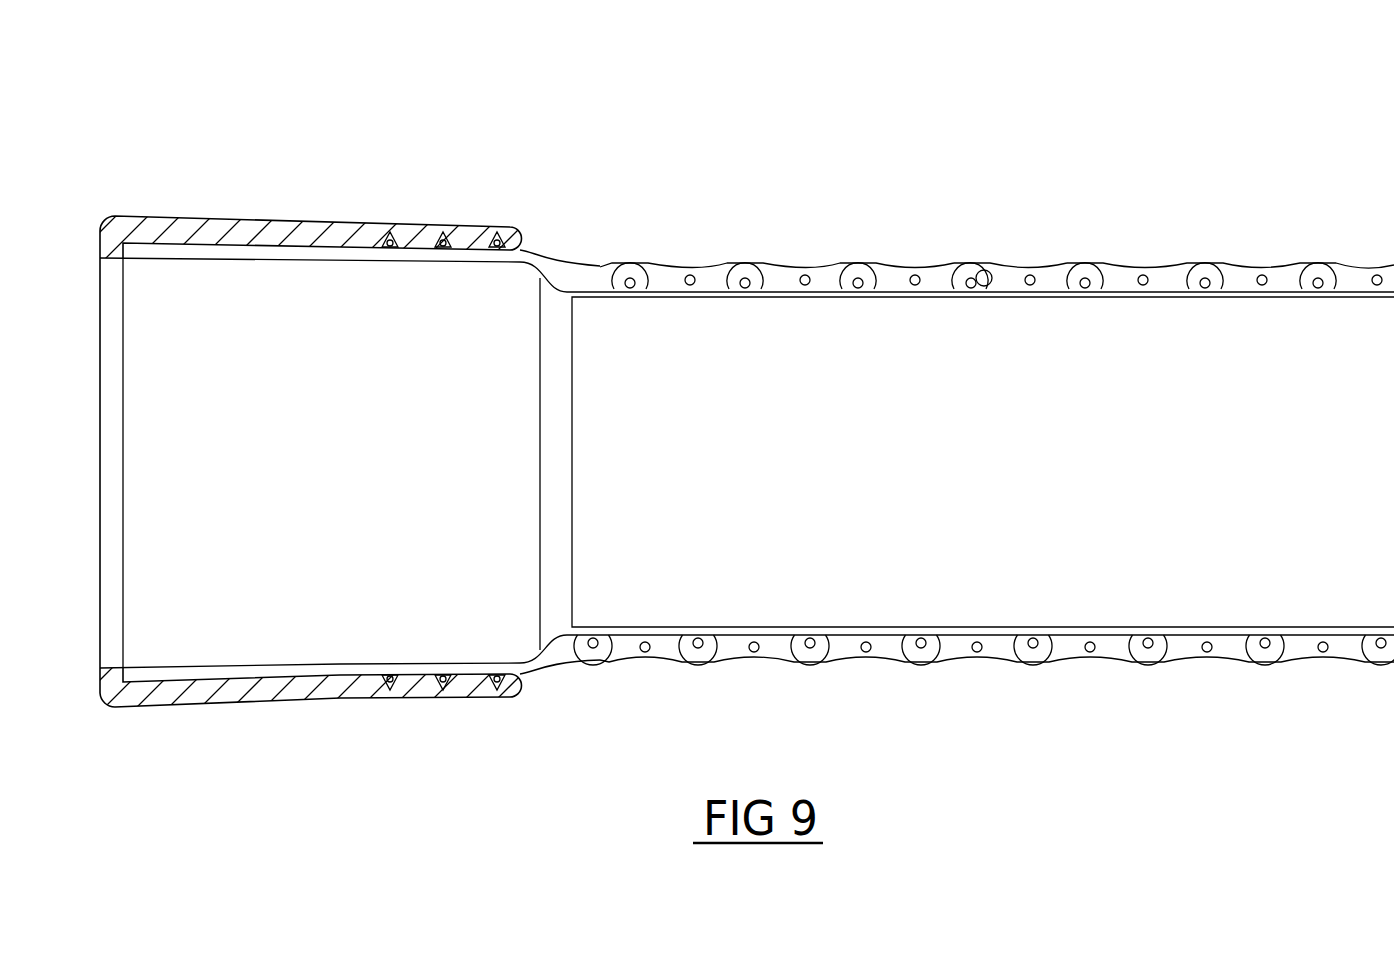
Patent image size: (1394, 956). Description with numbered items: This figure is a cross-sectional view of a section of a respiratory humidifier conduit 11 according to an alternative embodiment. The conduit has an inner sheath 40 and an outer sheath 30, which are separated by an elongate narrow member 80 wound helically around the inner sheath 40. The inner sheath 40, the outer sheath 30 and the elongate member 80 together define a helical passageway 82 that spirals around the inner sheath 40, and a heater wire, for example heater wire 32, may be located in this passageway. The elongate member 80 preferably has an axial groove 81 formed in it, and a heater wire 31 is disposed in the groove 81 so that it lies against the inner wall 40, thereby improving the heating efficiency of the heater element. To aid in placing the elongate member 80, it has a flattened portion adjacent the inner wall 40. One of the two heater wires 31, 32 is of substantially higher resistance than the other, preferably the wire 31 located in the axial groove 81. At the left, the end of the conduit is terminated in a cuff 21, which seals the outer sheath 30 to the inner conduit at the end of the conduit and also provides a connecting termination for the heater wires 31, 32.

The pipe 11 is at (1000, 172).
The cuff 21 is at (333, 233).
The outer sheath 30 is at (1143, 268).
The heater wire 31 is at (987, 265).
The heater wire 32 is at (915, 273).
The inner sheath 40 is at (1237, 292).
The elongate narrow member 80 is at (987, 267).
The axial groove 81 is at (970, 273).
The helical passageway 82 is at (887, 273).